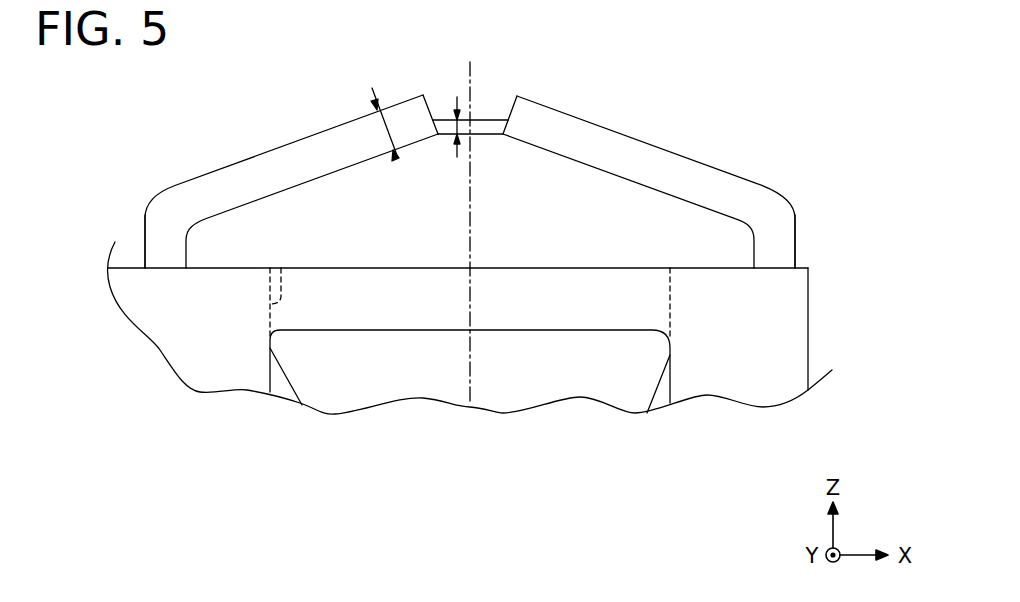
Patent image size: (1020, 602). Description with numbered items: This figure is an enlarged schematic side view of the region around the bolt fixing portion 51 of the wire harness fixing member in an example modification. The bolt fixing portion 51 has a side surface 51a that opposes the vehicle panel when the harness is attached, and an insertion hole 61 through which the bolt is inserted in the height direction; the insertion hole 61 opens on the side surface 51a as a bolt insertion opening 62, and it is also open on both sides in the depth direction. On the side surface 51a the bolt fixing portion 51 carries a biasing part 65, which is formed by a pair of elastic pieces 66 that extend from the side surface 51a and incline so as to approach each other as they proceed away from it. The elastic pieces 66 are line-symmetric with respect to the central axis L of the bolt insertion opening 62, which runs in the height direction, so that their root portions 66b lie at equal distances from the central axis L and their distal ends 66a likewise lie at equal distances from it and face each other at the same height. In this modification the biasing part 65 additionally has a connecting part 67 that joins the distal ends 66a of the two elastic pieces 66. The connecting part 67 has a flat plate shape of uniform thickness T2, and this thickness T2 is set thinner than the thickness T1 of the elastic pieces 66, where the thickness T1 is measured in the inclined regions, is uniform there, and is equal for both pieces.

The bolt fixing portion 51 is at (470, 327).
The side surface 51a is at (522, 268).
The insertion hole 61 is at (271, 385).
The bolt insertion opening 62 is at (281, 268).
The biasing part 65 is at (457, 156).
The elastic pieces 66 is at (305, 137).
The distal ends 66a is at (434, 103).
The root portions 66b is at (152, 250).
The connecting part 67 is at (487, 136).
The thickness of the elastic pieces T1 is at (384, 130).
The thickness of the connecting part T2 is at (449, 128).
The central axis L is at (472, 70).